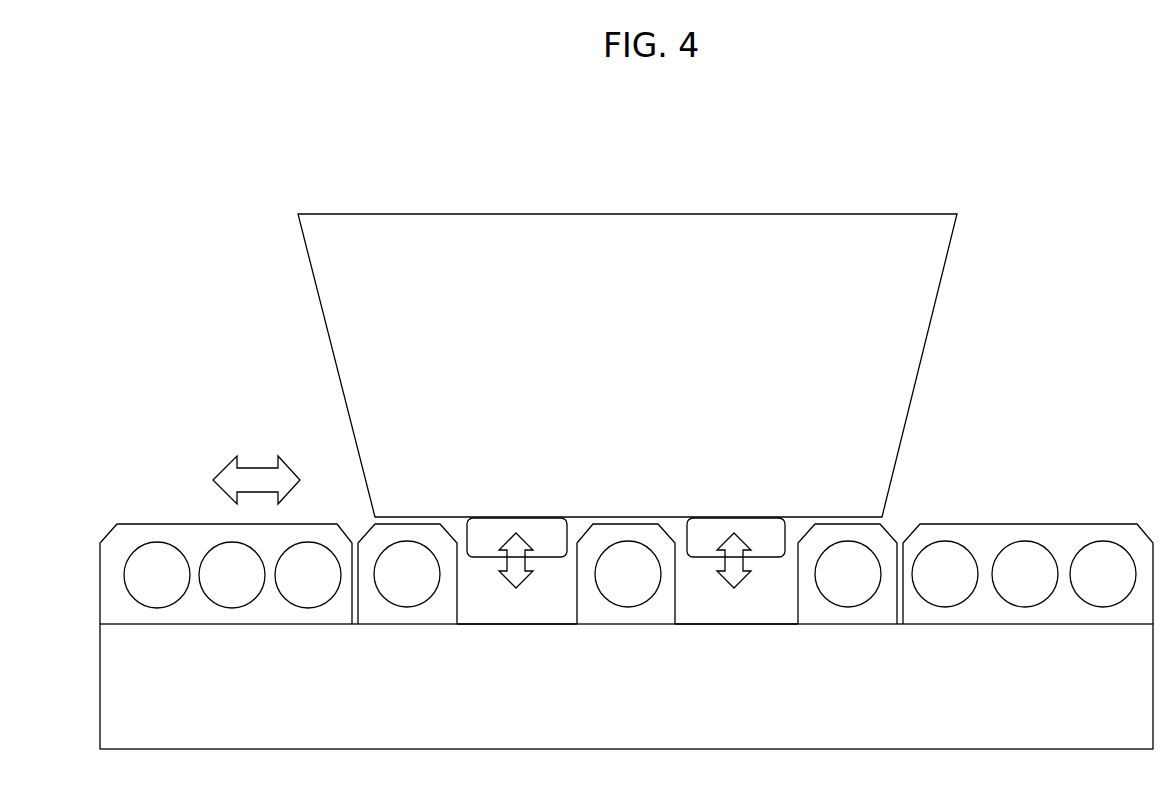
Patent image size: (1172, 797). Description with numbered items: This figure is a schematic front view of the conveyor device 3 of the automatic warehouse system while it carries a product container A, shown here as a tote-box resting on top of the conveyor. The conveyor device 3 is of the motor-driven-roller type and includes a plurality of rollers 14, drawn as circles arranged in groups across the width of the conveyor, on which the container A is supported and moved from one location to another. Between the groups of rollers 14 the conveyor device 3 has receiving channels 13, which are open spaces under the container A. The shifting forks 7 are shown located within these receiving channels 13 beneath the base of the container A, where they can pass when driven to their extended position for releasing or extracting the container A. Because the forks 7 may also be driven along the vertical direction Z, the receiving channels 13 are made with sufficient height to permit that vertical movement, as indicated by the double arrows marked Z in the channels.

The conveyor device 3 is at (92, 671).
The shifting forks 7 is at (500, 525).
The receiving channels 13 is at (497, 621).
The rollers 14 is at (170, 588).
The product containers A is at (745, 253).
The vertical direction Z is at (508, 590).